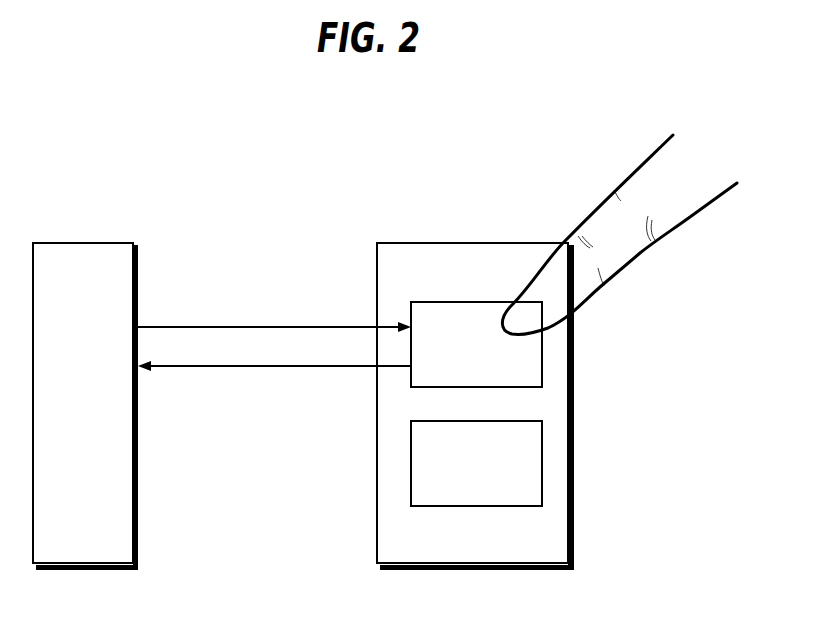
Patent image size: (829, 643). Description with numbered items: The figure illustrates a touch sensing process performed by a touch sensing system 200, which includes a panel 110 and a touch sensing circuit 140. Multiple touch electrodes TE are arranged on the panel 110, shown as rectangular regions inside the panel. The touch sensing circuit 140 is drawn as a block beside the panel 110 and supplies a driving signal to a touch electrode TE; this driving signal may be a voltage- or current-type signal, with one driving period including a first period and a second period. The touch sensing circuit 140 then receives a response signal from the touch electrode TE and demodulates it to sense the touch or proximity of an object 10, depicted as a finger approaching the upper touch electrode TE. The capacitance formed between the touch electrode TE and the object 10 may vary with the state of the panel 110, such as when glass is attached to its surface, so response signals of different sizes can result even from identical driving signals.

The touch sensing system 200 is at (117, 120).
The touch sensing circuit 140 is at (102, 418).
The panel 110 is at (534, 406).
The object 10 is at (585, 226).
The touch electrode TE is at (542, 373).